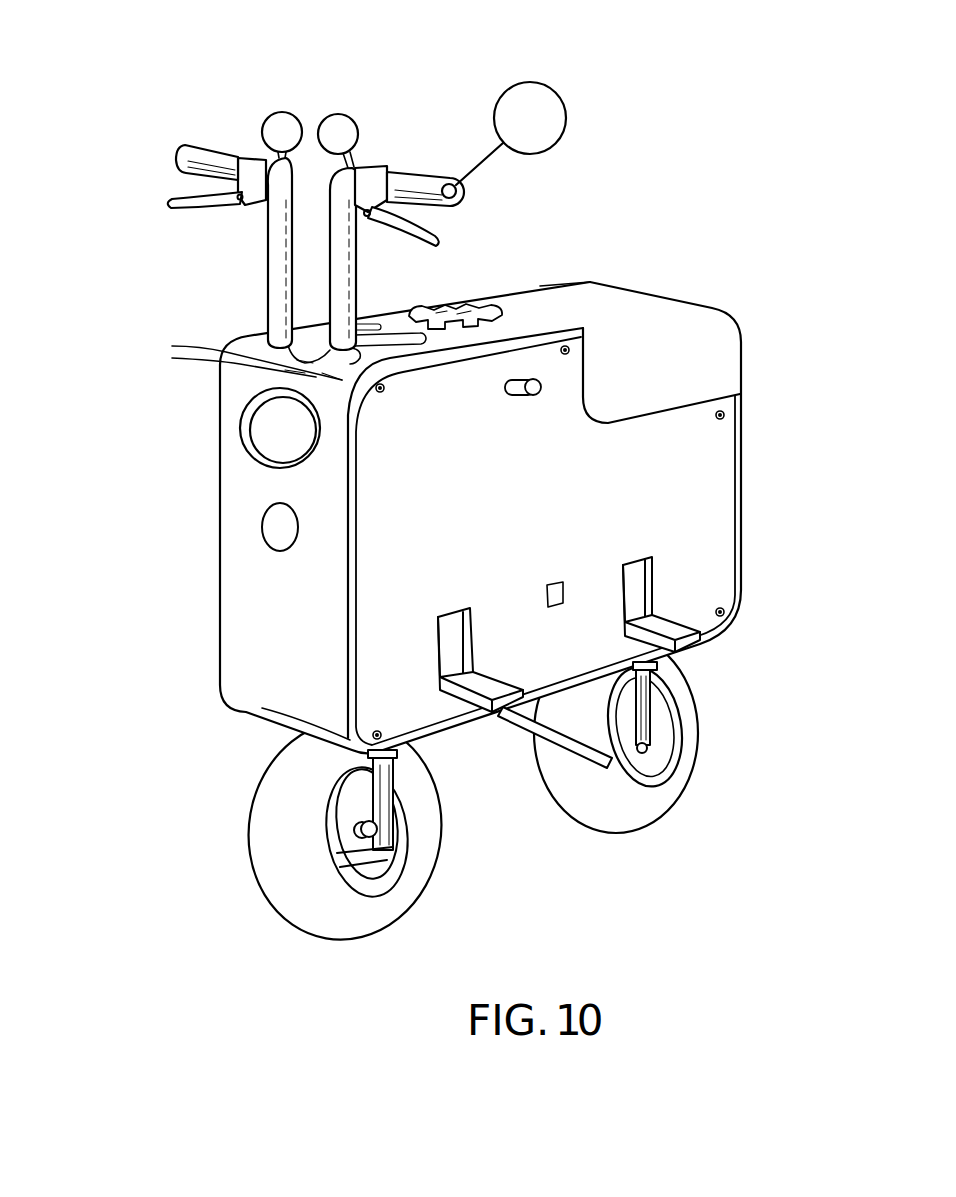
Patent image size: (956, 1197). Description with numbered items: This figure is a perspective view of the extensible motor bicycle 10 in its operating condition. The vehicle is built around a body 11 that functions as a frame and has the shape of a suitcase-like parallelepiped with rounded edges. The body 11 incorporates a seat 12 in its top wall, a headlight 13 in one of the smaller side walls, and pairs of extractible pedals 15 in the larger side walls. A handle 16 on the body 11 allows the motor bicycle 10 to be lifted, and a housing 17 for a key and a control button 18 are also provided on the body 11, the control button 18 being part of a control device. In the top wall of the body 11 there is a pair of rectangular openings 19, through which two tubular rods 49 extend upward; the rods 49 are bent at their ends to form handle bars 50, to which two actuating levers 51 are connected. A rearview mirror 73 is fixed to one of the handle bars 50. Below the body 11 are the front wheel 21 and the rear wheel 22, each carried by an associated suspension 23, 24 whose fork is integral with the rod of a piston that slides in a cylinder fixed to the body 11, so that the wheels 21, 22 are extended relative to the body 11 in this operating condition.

The extensible motor bicycle 10 is at (435, 485).
The body 11 is at (212, 523).
The seat 12 is at (683, 318).
The headlight 13 is at (257, 420).
The extractible pedals 15 is at (688, 617).
The handle 16 is at (460, 303).
The housing for a key 17 is at (540, 286).
The control button 18 is at (540, 388).
The rectangular openings 19 is at (236, 358).
The front wheel 21 is at (277, 782).
The rear wheel 22 is at (653, 797).
The front suspension 23 is at (398, 818).
The rear suspension 24 is at (664, 697).
The tubular rods 49 is at (343, 237).
The handle bars 50 is at (193, 158).
The actuating levers 51 is at (166, 200).
The rearview mirror 73 is at (537, 98).